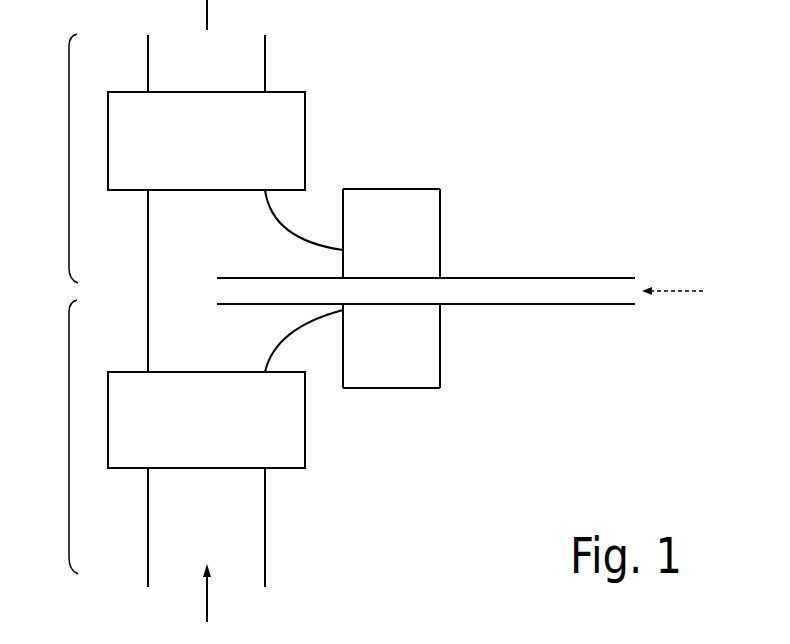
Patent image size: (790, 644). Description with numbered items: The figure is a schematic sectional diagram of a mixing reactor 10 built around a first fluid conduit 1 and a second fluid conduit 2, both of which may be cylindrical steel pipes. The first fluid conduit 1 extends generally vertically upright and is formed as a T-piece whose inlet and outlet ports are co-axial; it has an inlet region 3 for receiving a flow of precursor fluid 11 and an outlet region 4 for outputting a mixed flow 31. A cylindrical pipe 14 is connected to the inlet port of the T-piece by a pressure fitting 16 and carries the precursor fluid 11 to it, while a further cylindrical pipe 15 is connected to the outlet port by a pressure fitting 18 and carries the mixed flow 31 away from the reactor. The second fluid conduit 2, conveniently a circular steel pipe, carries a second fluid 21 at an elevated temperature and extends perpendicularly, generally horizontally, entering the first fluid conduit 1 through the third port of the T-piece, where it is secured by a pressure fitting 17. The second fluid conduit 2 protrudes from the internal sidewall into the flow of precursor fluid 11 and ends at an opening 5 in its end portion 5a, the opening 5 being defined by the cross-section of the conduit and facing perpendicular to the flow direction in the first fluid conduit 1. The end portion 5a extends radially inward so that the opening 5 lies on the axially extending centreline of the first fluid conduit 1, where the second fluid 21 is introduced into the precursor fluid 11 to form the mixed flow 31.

The first fluid conduit 1 is at (148, 268).
The second fluid conduit 2 is at (560, 305).
The inlet region 3 is at (70, 429).
The outlet region 4 is at (70, 155).
The opening 5 is at (220, 292).
The end portion 5a is at (245, 277).
The arrangement 10 is at (444, 99).
The precursor fluid 11 is at (215, 530).
The cylindrical pipe 14 is at (266, 535).
The further cylindrical pipe 15 is at (266, 52).
The pressure fitting 16 is at (305, 445).
The pressure fitting 17 is at (440, 205).
The pressure fitting 18 is at (305, 117).
The second fluid 21 is at (618, 288).
The mixed flow 31 is at (217, 80).